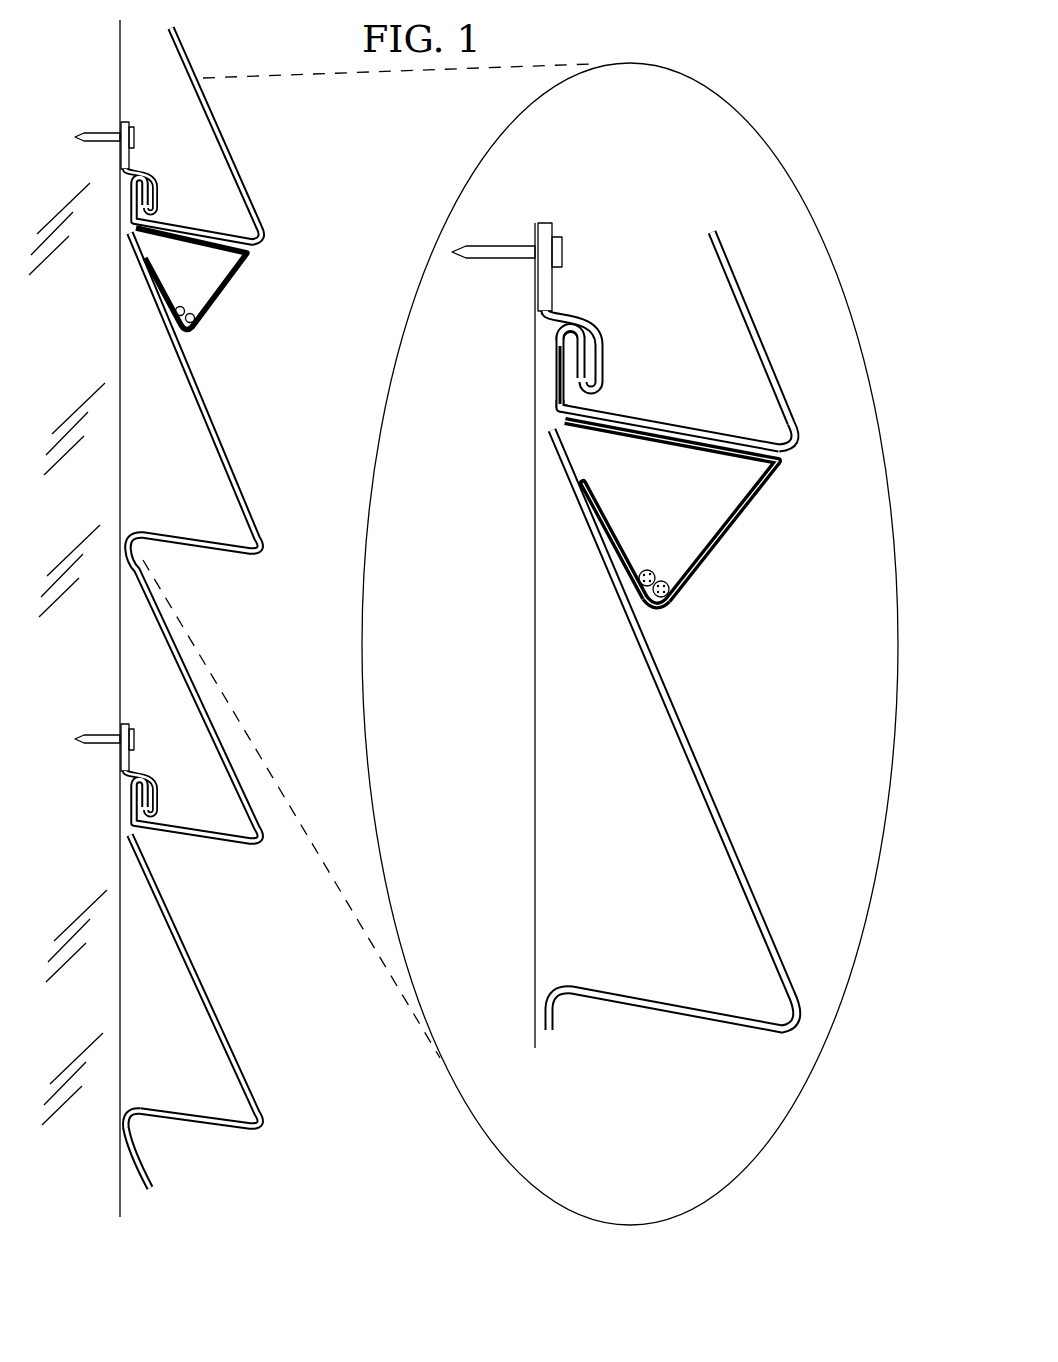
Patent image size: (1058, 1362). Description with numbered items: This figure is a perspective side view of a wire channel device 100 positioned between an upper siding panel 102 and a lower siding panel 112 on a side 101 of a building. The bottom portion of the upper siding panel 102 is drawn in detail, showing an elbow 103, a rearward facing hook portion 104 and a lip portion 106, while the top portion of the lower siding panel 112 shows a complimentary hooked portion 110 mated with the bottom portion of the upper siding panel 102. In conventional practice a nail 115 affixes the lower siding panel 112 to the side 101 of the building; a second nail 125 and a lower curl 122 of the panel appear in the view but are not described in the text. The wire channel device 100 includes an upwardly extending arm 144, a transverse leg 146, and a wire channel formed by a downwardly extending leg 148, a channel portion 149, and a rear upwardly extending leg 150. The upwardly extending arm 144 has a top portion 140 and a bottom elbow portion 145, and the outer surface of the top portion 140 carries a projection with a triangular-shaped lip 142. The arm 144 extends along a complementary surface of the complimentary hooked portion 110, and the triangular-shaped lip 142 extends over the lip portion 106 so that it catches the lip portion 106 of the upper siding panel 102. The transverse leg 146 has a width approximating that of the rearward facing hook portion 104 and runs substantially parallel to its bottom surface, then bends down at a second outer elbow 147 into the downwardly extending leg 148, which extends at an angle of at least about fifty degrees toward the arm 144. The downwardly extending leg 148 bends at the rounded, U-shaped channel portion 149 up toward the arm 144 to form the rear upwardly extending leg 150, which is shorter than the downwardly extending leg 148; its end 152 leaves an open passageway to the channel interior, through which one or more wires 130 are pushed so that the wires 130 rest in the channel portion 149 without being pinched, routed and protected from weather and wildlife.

The wire channel device 100 is at (738, 616).
The side of a building 101 is at (121, 963).
The upper siding panel 102 is at (249, 186).
The elbow 103 is at (803, 437).
The rearward facing hook portion 104 is at (662, 410).
The lip portion 106 is at (569, 373).
The complimentary hooked portion 110 is at (580, 397).
The lower siding panel 112 is at (261, 826).
The nail 115 is at (134, 140).
The bottom curl of panel 122 is at (152, 1167).
The second clip 125 is at (158, 731).
The wires 130 is at (660, 583).
The top portion 140 is at (555, 328).
The triangular-shaped lip 142 is at (555, 347).
The upwardly extending arm 144 is at (558, 398).
The bottom elbow portion 145 is at (557, 418).
The transverse leg 146 is at (694, 455).
The second outer elbow 147 is at (781, 464).
The downwardly extending leg 148 is at (723, 549).
The channel portion 149 is at (655, 617).
The rear upwardly extending leg 150 is at (612, 523).
The end of sealant 152 is at (586, 481).